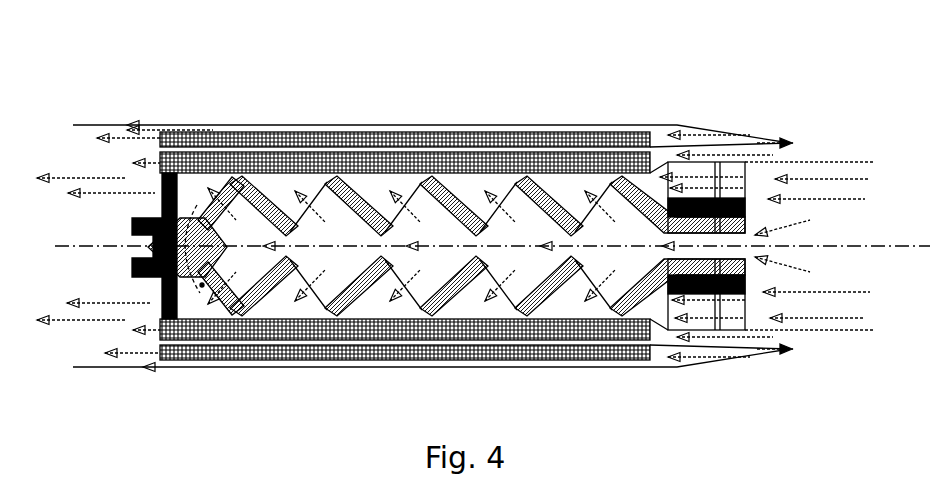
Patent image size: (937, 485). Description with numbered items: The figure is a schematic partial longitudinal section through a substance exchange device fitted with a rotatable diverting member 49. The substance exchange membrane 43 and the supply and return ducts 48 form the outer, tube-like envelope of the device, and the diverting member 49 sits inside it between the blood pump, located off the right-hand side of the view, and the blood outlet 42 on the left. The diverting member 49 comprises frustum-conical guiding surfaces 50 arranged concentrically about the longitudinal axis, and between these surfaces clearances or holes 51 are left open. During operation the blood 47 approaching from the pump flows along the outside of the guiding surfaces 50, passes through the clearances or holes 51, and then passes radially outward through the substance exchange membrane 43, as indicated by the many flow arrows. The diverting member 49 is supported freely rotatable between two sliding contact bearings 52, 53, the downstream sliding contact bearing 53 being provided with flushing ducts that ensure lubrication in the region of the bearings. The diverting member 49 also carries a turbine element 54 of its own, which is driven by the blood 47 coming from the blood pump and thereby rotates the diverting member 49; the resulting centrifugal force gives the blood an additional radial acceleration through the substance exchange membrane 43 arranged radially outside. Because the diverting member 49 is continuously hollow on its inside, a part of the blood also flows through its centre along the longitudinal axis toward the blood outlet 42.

The blood outlet 42 is at (135, 185).
The substance exchange membrane 43 is at (272, 143).
The blood 47 is at (785, 198).
The supply and return ducts 48 is at (803, 353).
The diverting member 49 is at (353, 187).
The frustum-conical guiding surfaces 50 is at (538, 188).
The clearances or holes 51 is at (393, 343).
The sliding contact bearing 52 is at (727, 185).
The sliding contact bearing 53 is at (138, 278).
The turbine element 54 is at (713, 308).